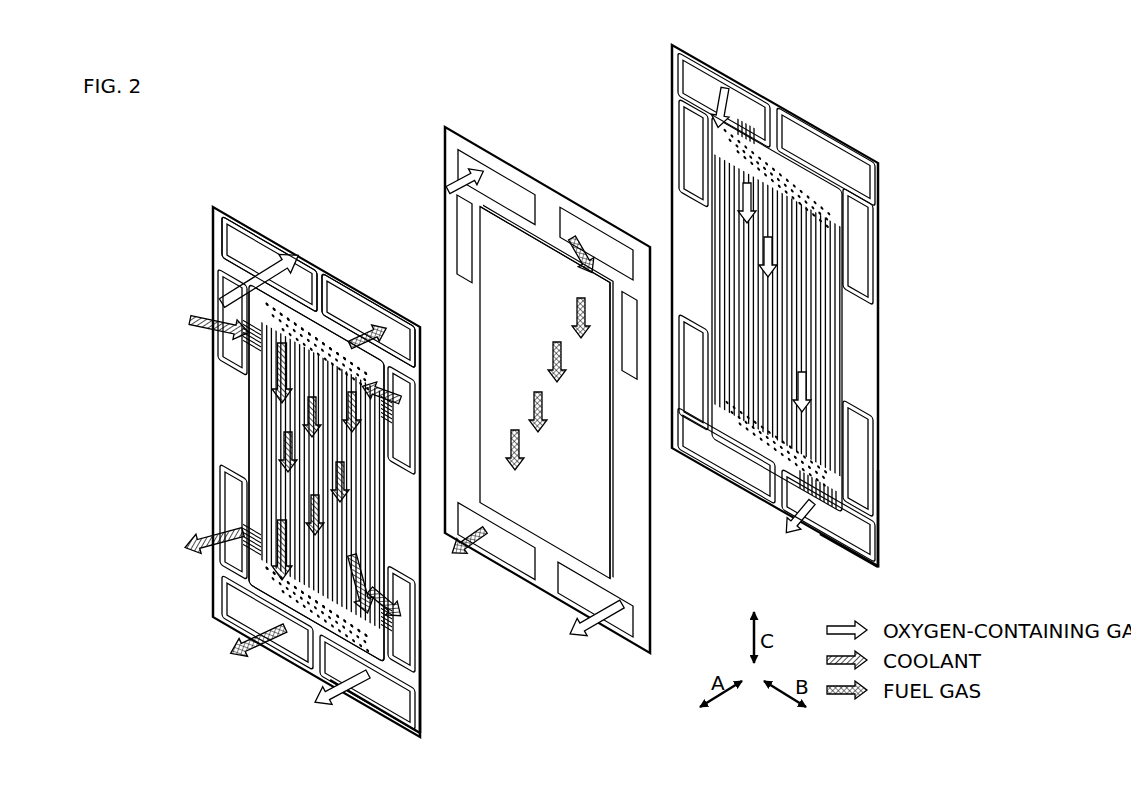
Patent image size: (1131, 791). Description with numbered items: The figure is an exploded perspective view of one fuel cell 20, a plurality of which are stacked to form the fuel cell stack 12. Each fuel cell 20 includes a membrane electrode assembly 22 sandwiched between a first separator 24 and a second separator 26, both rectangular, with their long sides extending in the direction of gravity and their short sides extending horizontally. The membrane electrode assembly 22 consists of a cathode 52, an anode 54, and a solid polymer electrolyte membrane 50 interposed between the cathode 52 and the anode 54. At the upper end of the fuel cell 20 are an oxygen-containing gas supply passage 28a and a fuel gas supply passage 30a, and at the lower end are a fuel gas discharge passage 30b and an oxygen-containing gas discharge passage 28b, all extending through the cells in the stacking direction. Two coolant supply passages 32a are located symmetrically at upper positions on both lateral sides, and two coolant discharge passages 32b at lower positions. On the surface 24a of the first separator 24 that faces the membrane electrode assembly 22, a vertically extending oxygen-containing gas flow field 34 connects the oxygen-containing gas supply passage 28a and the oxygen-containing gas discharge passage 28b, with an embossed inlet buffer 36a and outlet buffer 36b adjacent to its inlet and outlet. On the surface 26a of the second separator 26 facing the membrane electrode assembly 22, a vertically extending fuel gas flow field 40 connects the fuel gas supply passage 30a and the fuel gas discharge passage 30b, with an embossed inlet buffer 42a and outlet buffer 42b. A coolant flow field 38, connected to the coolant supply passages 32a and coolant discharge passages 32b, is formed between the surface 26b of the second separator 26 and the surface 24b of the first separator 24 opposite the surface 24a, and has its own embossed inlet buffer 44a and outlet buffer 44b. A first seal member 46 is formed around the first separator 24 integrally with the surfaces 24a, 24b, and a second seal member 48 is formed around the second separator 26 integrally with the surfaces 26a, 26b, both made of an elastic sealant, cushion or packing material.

The fuel cell 20 is at (222, 132).
The fuel cell stack 12 is at (260, 132).
The membrane electrode assembly 22 is at (446, 128).
The first separator 24 is at (672, 46).
The surface of first separator 24a is at (873, 512).
The surface of first separator 24b is at (880, 539).
The second separator 26 is at (214, 209).
The surface of second separator 26a is at (423, 708).
The surface of second separator 26b is at (421, 682).
The oxygen-containing gas supply passage 28a is at (270, 265).
The oxygen-containing gas discharge passage 28b is at (386, 695).
The fuel gas supply passage 30a is at (360, 311).
The fuel gas discharge passage 30b is at (243, 612).
The coolant supply passage 32a is at (233, 297).
The coolant discharge passage 32b is at (231, 506).
The oxygen-containing gas flow field 34 is at (815, 297).
The inlet buffer 36a is at (806, 192).
The outlet buffer 36b is at (758, 426).
The coolant flow field 38 is at (355, 500).
The fuel gas flow field 40 is at (292, 425).
The inlet buffer 42a is at (317, 304).
The inlet buffer 44a is at (292, 322).
The outlet buffer 42b is at (316, 645).
The outlet buffer 44b is at (308, 598).
The first seal member 46 is at (866, 162).
The second seal member 48 is at (418, 326).
The solid polymer electrolyte membrane 50 is at (636, 598).
The cathode 52 is at (590, 440).
The anode 54 is at (597, 497).